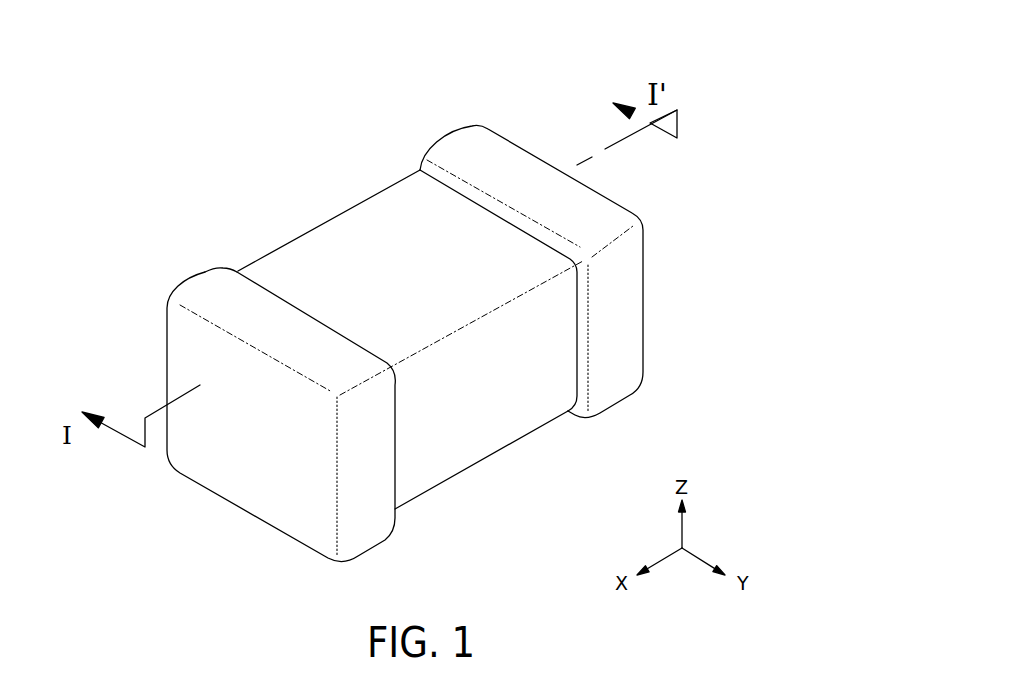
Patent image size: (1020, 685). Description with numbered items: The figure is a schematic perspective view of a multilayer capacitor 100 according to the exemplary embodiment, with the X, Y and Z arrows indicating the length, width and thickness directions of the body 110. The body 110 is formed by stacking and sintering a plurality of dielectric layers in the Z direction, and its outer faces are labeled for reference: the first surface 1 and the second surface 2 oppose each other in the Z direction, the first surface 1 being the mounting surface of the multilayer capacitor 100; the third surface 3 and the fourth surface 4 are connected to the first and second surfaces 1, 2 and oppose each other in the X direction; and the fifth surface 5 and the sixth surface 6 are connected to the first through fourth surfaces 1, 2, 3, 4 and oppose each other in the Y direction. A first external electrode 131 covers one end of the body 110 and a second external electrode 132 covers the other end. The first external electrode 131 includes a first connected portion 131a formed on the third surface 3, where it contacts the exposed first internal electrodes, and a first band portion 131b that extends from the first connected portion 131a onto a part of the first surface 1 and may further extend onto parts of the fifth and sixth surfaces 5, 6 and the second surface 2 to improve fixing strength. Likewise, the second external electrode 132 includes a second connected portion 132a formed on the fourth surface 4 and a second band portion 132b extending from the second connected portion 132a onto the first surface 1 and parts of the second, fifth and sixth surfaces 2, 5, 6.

The multilayer capacitor 100 is at (285, 37).
The body 110 is at (342, 234).
The first external electrode 131 is at (177, 194).
The first connected portion 131a is at (180, 348).
The first band portion 131b is at (205, 290).
The second external electrode 132 is at (487, 14).
The second connected portion 132a is at (516, 143).
The second band portion 132b is at (452, 148).
The first surface 1 is at (424, 466).
The second surface 2 is at (406, 222).
The third surface 3 is at (232, 461).
The fourth surface 4 is at (618, 306).
The fifth surface 5 is at (512, 407).
The sixth surface 6 is at (310, 264).